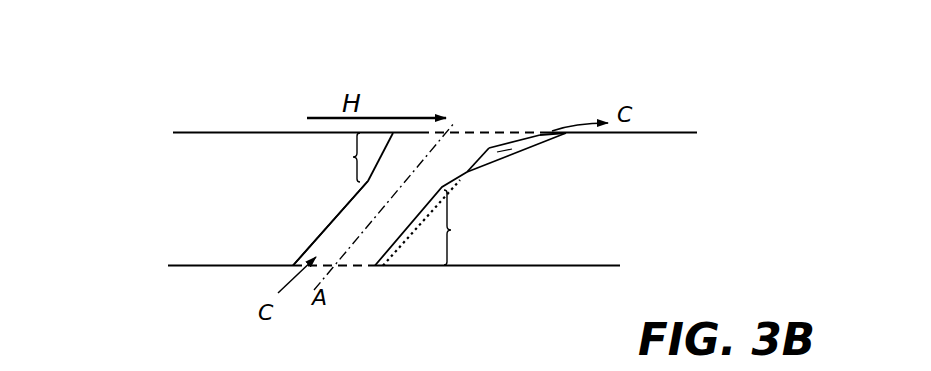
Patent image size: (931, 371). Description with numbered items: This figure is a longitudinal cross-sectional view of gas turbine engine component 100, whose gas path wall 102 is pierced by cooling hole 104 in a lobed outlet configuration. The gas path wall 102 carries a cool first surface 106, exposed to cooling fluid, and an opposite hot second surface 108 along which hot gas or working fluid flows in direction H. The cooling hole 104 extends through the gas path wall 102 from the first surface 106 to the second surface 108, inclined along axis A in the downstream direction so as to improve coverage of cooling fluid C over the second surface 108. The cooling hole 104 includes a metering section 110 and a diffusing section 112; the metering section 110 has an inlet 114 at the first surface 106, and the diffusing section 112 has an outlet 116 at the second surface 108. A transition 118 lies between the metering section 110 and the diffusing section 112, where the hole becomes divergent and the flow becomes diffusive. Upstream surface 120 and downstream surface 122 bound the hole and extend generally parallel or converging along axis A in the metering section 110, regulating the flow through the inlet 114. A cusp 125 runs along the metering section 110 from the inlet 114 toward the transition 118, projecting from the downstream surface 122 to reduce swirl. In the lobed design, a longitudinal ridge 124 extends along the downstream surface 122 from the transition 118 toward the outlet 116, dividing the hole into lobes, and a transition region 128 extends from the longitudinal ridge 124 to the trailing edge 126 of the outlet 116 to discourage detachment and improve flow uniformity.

The gas turbine engine component 100 is at (112, 75).
The gas path wall 102 is at (245, 182).
The cooling hole 104 is at (410, 213).
The first surface 106 is at (537, 266).
The second surface 108 is at (268, 132).
The metering section 110 is at (467, 227).
The diffusing section 112 is at (334, 157).
The inlet 114 is at (352, 267).
The outlet 116 is at (522, 130).
The transition 118 is at (355, 185).
The upstream surface 120 is at (312, 247).
The downstream surface 122 is at (495, 165).
The longitudinal ridge 124 is at (477, 162).
The cusp 125 is at (407, 227).
The trailing edge 126 is at (568, 133).
The transition region 128 is at (505, 140).